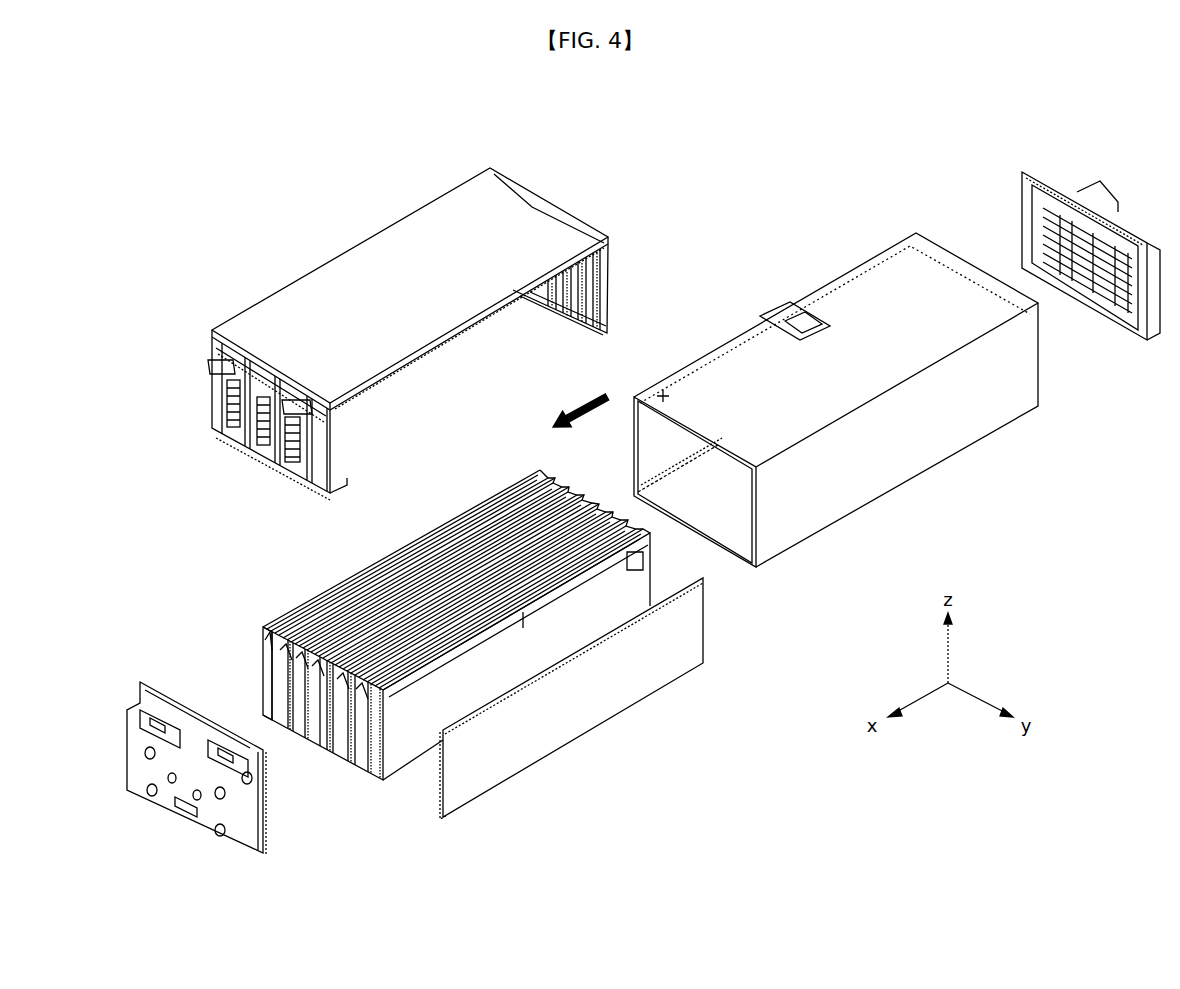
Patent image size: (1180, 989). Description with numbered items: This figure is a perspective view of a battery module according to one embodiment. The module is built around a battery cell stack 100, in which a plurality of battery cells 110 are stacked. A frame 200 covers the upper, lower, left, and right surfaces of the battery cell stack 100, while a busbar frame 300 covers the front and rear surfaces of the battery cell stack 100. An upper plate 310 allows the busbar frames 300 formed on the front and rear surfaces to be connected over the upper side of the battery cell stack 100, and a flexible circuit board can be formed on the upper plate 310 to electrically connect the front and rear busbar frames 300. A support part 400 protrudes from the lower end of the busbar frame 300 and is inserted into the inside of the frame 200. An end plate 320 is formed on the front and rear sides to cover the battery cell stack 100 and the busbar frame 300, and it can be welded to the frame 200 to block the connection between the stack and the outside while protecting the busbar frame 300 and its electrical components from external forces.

The battery cell stack 100 is at (391, 625).
The battery cell 110 is at (277, 620).
The frame 200 is at (920, 446).
The busbar frame 300 is at (428, 334).
The upper plate 310 is at (367, 263).
The end plate 320 is at (1020, 194).
The support part 400 is at (567, 313).